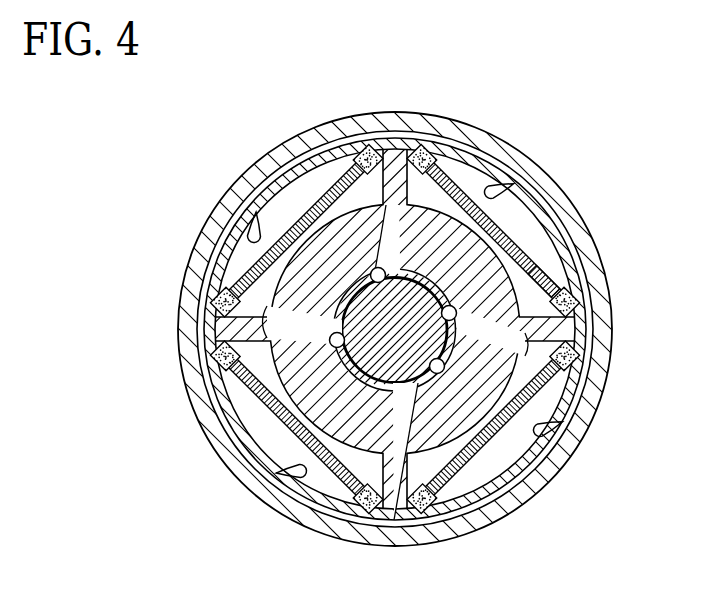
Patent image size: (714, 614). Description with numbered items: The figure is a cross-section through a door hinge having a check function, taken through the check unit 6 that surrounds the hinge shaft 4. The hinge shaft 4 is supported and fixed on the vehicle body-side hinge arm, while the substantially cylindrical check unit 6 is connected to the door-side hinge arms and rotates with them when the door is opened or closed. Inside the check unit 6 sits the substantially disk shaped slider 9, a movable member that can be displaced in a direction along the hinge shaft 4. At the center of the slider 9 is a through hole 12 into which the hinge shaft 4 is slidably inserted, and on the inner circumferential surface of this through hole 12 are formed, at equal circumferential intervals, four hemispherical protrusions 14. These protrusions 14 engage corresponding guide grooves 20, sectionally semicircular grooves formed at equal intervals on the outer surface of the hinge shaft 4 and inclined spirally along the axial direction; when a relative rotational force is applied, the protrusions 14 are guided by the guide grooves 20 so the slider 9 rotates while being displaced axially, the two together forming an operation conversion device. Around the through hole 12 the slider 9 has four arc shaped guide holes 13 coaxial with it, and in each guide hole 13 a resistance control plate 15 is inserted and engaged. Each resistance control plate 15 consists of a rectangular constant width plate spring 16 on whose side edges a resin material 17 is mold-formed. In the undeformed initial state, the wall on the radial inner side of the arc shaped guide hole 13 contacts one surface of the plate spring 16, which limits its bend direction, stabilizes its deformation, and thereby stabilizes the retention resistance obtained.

The hinge shaft 4 is at (345, 358).
The check unit 6 is at (602, 265).
The slider 9 is at (596, 318).
The through hole 12 is at (438, 370).
The arc shaped guide hole 13 is at (498, 188).
The hemispherical protrusion 14 is at (378, 275).
The resistance control plate 15 is at (292, 222).
The plate spring 16 is at (552, 292).
The resin material 17 is at (420, 160).
The guide groove 20 is at (400, 271).